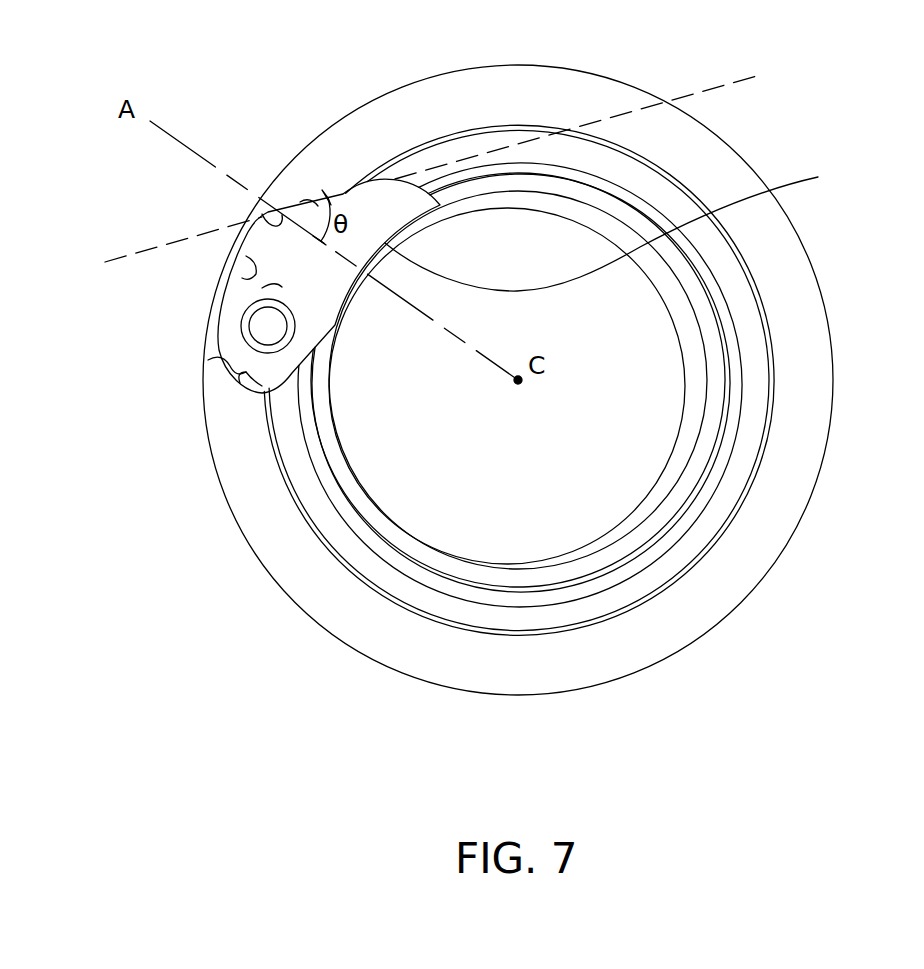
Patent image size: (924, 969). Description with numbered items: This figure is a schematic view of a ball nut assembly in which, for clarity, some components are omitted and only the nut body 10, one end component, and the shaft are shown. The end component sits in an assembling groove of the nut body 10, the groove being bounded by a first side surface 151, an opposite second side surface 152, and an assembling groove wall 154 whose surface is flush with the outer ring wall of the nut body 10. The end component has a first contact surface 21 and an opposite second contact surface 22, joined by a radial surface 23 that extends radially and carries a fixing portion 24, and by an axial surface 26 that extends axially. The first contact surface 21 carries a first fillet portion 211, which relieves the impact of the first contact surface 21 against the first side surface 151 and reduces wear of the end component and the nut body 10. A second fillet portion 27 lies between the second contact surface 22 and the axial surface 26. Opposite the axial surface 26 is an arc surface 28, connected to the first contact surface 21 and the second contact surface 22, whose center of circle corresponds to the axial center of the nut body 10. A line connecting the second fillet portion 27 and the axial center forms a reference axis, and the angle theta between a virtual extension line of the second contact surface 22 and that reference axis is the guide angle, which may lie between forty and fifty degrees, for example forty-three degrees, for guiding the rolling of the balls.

The nut body 10 is at (818, 322).
The first contact surface 21 is at (250, 381).
The first fillet portion 211 is at (240, 373).
The second contact surface 22 is at (372, 206).
The radial surface 23 is at (262, 290).
The fixing portion 24 is at (248, 327).
The axial surface 26 is at (280, 288).
The second fillet portion 27 is at (262, 213).
The arc surface 28 is at (618, 227).
The first side surface 151 is at (208, 360).
The second side surface 152 is at (310, 204).
The assembling groove wall 154 is at (250, 258).